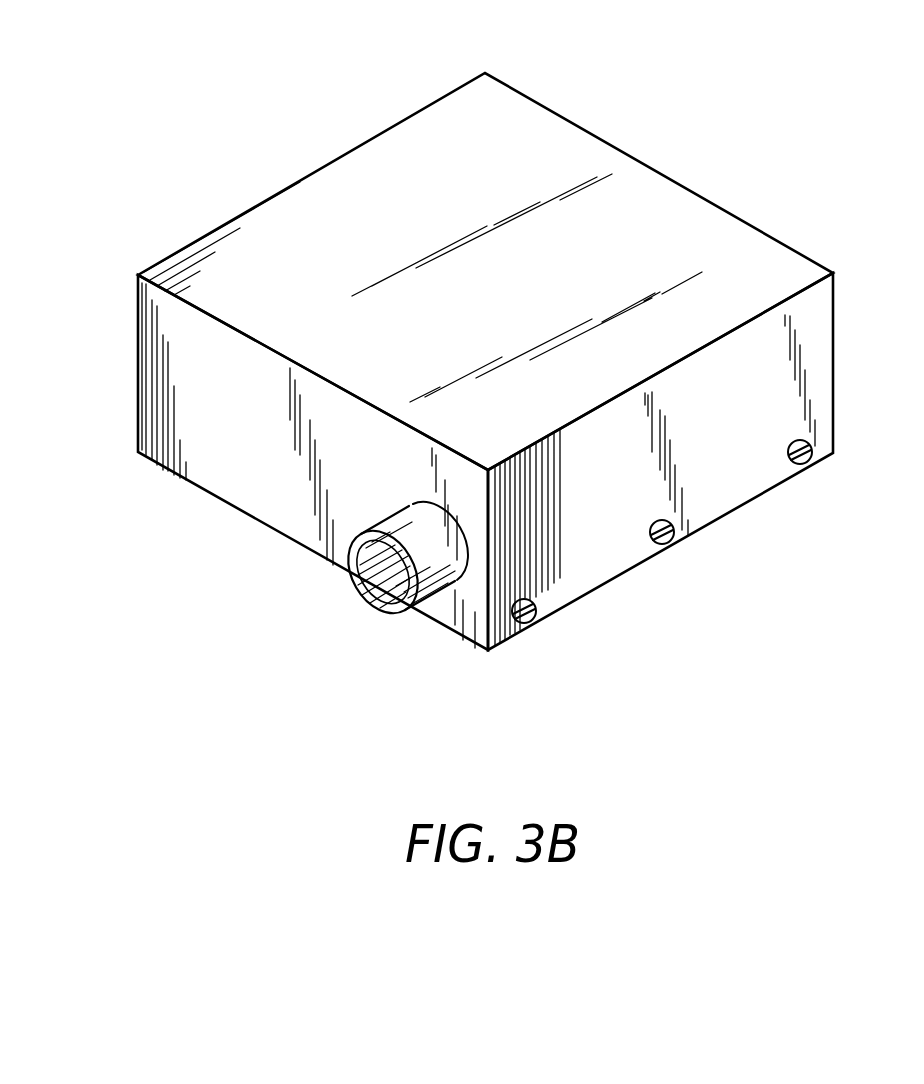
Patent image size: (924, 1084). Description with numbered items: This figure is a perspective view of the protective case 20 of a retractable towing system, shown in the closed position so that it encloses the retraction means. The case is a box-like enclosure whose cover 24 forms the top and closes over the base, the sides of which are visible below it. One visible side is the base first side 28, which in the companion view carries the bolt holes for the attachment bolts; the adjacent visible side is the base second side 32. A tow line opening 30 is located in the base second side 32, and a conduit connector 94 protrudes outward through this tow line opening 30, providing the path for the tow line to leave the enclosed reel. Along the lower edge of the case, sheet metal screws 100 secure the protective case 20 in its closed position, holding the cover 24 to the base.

The protective case 20 is at (511, 389).
The cover 24 is at (525, 288).
The base first side 28 is at (603, 138).
The tow line opening 30 is at (408, 615).
The base second side 32 is at (238, 485).
The conduit connector 94 is at (430, 605).
The sheet metal screws 100 is at (533, 622).